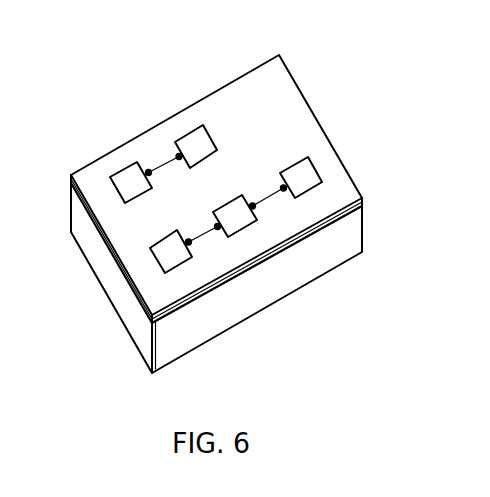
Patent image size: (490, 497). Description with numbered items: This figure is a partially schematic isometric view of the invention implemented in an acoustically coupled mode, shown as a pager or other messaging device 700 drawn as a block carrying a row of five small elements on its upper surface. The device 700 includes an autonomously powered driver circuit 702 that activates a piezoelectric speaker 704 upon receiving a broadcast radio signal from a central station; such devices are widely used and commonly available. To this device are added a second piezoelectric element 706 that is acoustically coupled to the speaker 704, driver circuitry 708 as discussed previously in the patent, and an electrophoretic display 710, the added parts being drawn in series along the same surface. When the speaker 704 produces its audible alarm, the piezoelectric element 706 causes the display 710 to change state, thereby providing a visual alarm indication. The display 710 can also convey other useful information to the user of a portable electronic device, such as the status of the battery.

The messaging device 700 is at (365, 110).
The autonomously powered driver circuit 702 is at (192, 131).
The piezoelectric speaker 704 is at (120, 171).
The second piezoelectric element 706 is at (181, 266).
The driver circuitry 708 is at (246, 228).
The electrophoretic display 710 is at (318, 168).